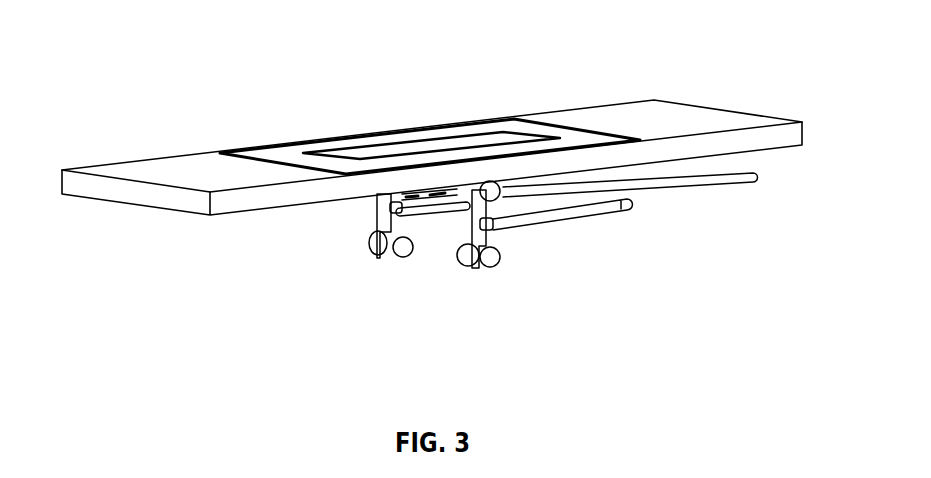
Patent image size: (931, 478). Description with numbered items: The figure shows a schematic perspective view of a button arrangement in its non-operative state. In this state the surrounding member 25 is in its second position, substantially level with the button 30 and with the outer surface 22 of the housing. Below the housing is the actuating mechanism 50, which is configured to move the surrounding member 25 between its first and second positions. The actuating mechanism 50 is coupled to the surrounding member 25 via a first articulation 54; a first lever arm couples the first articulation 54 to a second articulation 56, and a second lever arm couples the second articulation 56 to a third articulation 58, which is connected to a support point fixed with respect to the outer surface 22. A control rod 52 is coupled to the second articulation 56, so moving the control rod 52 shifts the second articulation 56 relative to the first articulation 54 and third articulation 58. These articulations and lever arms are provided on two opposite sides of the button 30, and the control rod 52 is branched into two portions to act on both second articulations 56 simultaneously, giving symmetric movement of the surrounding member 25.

The outer surface of the housing 22 is at (658, 122).
The surrounding member 25 is at (288, 154).
The button 30 is at (427, 148).
The actuating mechanism 50 is at (560, 292).
The control rod 52 is at (673, 193).
The first articulation 54 is at (464, 210).
The second articulation 56 is at (380, 209).
The third articulation 58 is at (387, 255).